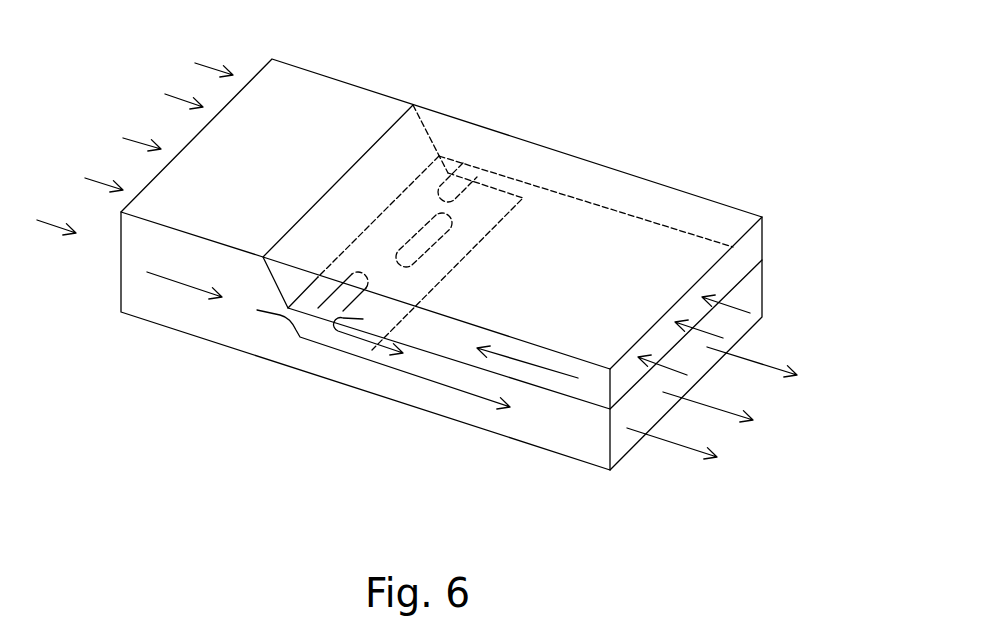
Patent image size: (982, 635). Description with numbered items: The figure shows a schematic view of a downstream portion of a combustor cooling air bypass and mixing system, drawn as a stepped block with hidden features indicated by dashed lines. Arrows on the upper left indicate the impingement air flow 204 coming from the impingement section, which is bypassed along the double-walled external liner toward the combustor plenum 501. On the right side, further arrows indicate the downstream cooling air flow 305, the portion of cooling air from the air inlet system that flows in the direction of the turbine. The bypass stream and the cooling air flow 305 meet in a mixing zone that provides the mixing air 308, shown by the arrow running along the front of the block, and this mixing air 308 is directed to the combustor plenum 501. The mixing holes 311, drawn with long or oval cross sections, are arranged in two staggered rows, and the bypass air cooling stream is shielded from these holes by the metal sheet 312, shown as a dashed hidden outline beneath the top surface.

The impingement air flow 204 is at (197, 288).
The downstream cooling air flow 305 is at (737, 305).
The mixing air 308 is at (492, 420).
The mixing holes 311 is at (430, 235).
The metal sheet 312 is at (587, 220).
The combustor plenum 501 is at (792, 466).